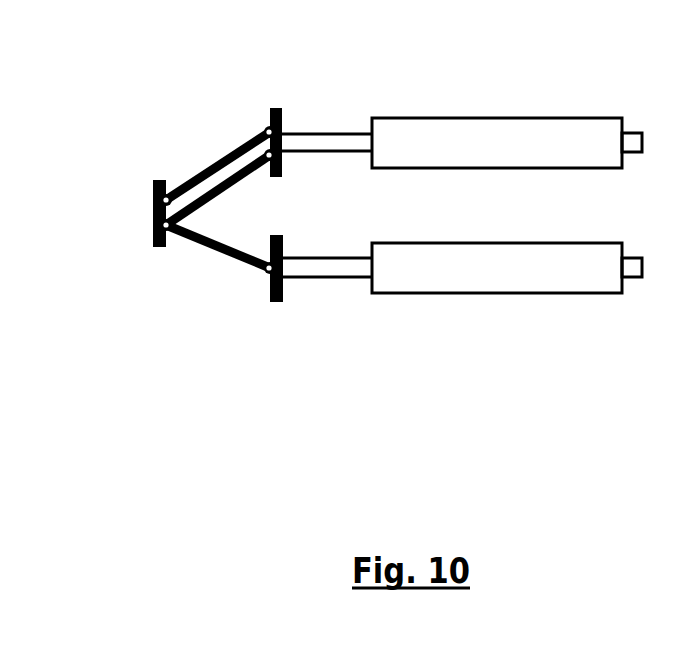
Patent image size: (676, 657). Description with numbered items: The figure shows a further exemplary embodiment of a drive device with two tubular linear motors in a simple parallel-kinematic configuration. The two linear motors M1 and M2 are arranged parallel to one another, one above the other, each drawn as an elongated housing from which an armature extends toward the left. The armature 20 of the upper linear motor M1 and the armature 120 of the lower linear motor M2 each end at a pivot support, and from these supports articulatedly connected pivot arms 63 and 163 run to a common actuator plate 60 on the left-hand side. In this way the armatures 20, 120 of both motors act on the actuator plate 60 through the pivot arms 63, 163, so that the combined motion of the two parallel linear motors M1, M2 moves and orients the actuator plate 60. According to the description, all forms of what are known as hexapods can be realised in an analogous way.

The actuator plate 60 is at (152, 207).
The pivot arm 63 is at (217, 178).
The pivot arm 163 is at (223, 255).
The armature 20 is at (333, 142).
The armature 120 is at (333, 272).
The linear motor M1 is at (526, 117).
The linear motor M2 is at (534, 295).